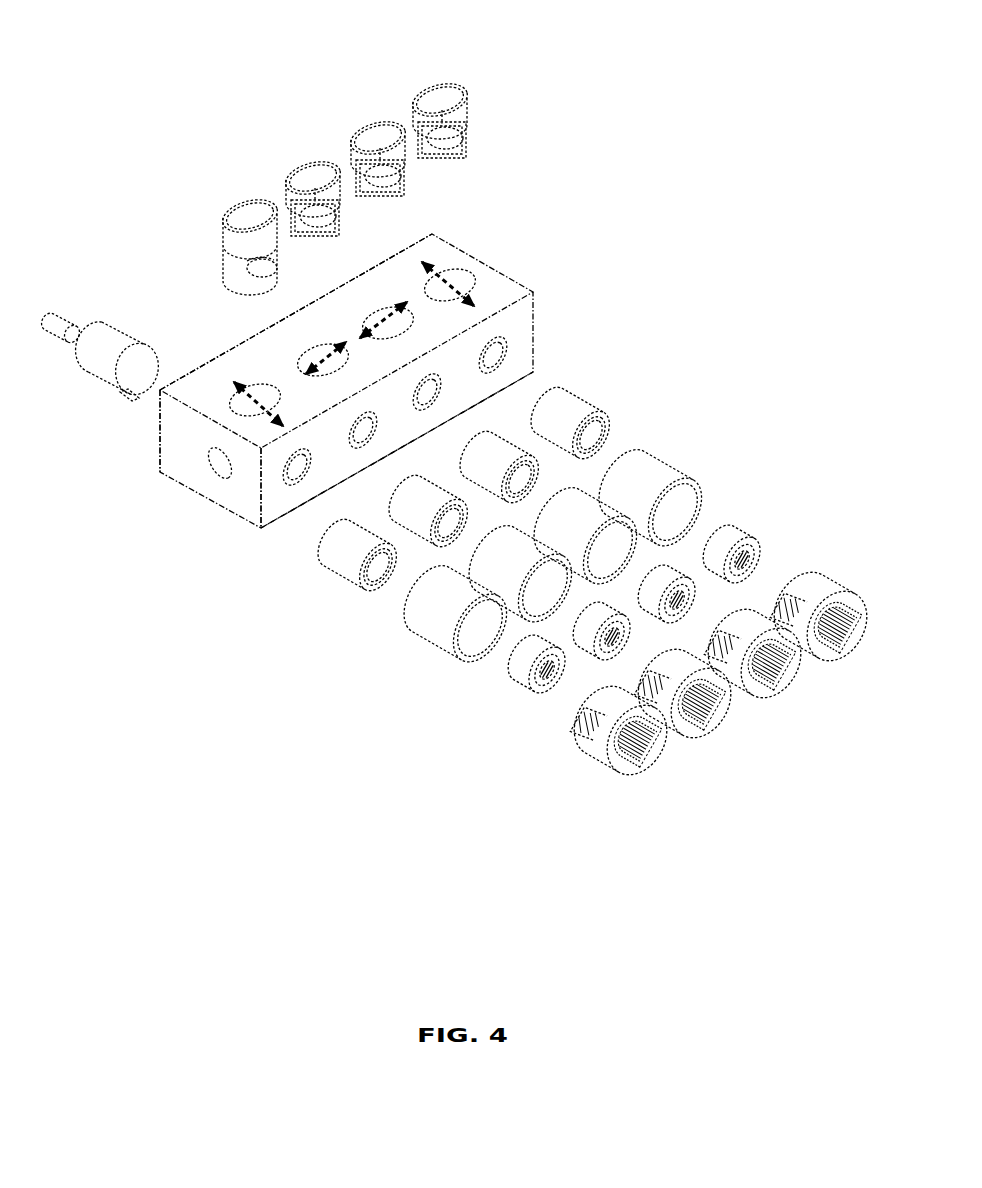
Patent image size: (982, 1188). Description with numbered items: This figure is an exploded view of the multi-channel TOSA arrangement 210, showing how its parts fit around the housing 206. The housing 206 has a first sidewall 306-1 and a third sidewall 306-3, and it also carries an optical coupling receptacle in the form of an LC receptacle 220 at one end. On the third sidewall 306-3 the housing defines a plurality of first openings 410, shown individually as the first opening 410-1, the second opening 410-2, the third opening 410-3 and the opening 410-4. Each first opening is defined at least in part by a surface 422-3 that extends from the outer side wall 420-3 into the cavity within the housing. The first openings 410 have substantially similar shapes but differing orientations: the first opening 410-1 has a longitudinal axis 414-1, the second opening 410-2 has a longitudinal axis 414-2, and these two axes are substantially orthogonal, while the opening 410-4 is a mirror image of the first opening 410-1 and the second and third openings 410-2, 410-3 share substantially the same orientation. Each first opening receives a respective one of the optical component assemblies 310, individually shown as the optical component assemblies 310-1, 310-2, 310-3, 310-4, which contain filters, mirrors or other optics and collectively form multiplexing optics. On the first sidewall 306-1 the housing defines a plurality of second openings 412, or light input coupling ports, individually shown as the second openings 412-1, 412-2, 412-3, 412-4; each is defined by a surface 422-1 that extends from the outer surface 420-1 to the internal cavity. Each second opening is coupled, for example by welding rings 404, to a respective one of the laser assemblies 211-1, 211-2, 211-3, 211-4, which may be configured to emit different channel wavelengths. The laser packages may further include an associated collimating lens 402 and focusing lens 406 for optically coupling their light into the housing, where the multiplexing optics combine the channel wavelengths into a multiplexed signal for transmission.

The multi-channel TOSA arrangement 210 is at (148, 226).
The LC receptacle 220 is at (128, 349).
The housing 206 is at (190, 479).
The first sidewall 306-1 is at (290, 502).
The third sidewall 306-3 is at (210, 360).
The outer surface 420-1 is at (268, 520).
The outer side wall 420-3 is at (227, 424).
The surface 422-1 is at (283, 474).
The surface 422-3 is at (270, 400).
The longitudinal axis 414-1 is at (288, 432).
The longitudinal axis 414-2 is at (332, 354).
The first openings 410 is at (450, 236).
The first opening 410-1 is at (460, 277).
The second opening 410-2 is at (353, 315).
The third opening 410-3 is at (300, 367).
The opening 410-4 is at (297, 403).
The second openings 412 is at (543, 407).
The second opening 412-1 is at (478, 386).
The second opening 412-2 is at (428, 418).
The second opening 412-3 is at (366, 448).
The second opening 412-4 is at (306, 482).
The focusing lens 406 is at (636, 436).
The welding rings 404 is at (723, 507).
The collimating lens 402 is at (777, 558).
The laser assembly 211-1 is at (797, 612).
The laser assembly 211-2 is at (733, 643).
The laser assembly 211-3 is at (672, 676).
The laser assembly 211-4 is at (598, 730).
The optical component assemblies 310 is at (392, 14).
The optical component assembly 310-1 is at (438, 96).
The optical component assembly 310-2 is at (373, 130).
The optical component assembly 310-3 is at (308, 172).
The optical component assembly 310-4 is at (236, 207).